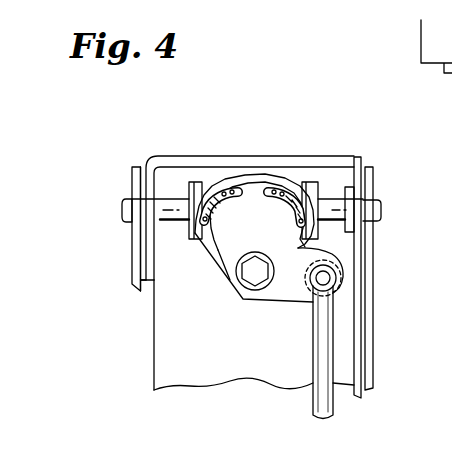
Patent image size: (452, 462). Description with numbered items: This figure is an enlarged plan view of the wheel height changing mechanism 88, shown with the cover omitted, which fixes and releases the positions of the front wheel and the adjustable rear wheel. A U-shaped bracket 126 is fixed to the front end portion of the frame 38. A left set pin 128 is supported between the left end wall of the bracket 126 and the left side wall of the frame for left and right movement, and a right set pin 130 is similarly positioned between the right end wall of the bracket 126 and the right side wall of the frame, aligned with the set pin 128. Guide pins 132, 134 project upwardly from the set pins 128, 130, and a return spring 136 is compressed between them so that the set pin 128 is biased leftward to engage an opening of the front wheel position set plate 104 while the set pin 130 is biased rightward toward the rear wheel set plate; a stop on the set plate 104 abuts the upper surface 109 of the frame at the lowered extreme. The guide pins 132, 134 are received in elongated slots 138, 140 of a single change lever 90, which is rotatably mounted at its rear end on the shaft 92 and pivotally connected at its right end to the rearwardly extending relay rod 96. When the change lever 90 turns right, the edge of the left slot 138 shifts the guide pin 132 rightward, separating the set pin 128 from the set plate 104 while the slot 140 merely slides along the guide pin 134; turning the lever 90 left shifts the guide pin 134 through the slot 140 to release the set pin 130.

The frame 38 is at (358, 262).
The wheel height changing mechanism 88 is at (271, 82).
The change lever 90 is at (287, 300).
The shaft 92 is at (247, 276).
The relay rod 96 is at (313, 401).
The front wheel position set plate 104 is at (138, 268).
The upper surface 109 is at (148, 245).
The U-shaped bracket 126 is at (318, 158).
The set pin 128 is at (173, 193).
The set pin 130 is at (372, 207).
The guide pin 132 is at (212, 186).
The guide pin 134 is at (311, 182).
The return spring 136 is at (244, 184).
The elongated slot 138 is at (220, 250).
The elongated slot 140 is at (297, 245).